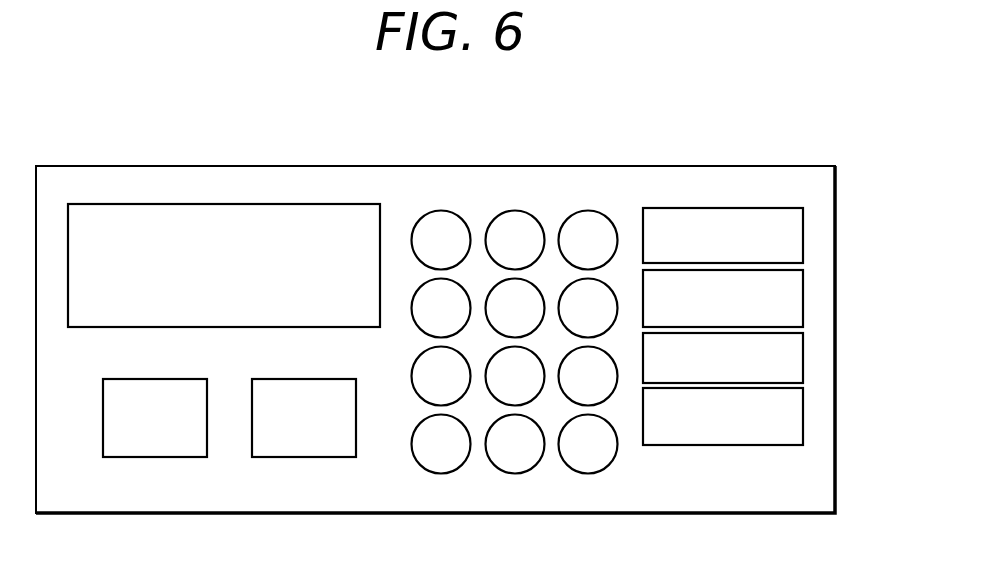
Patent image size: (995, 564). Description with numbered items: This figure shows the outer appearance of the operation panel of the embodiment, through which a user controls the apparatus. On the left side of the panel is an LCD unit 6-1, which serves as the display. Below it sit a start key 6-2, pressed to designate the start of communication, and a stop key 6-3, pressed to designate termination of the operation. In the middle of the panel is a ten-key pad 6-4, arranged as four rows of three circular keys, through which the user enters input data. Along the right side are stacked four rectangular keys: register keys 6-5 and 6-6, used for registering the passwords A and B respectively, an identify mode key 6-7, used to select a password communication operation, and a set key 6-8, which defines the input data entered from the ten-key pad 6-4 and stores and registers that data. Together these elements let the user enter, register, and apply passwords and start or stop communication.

The LCD unit 6-1 is at (172, 204).
The start key 6-2 is at (159, 457).
The stop key 6-3 is at (320, 457).
The ten-key pad 6-4 is at (597, 160).
The register key 6-5 is at (805, 233).
The register key 6-6 is at (805, 297).
The identify mode key 6-7 is at (805, 357).
The set key 6-8 is at (805, 415).